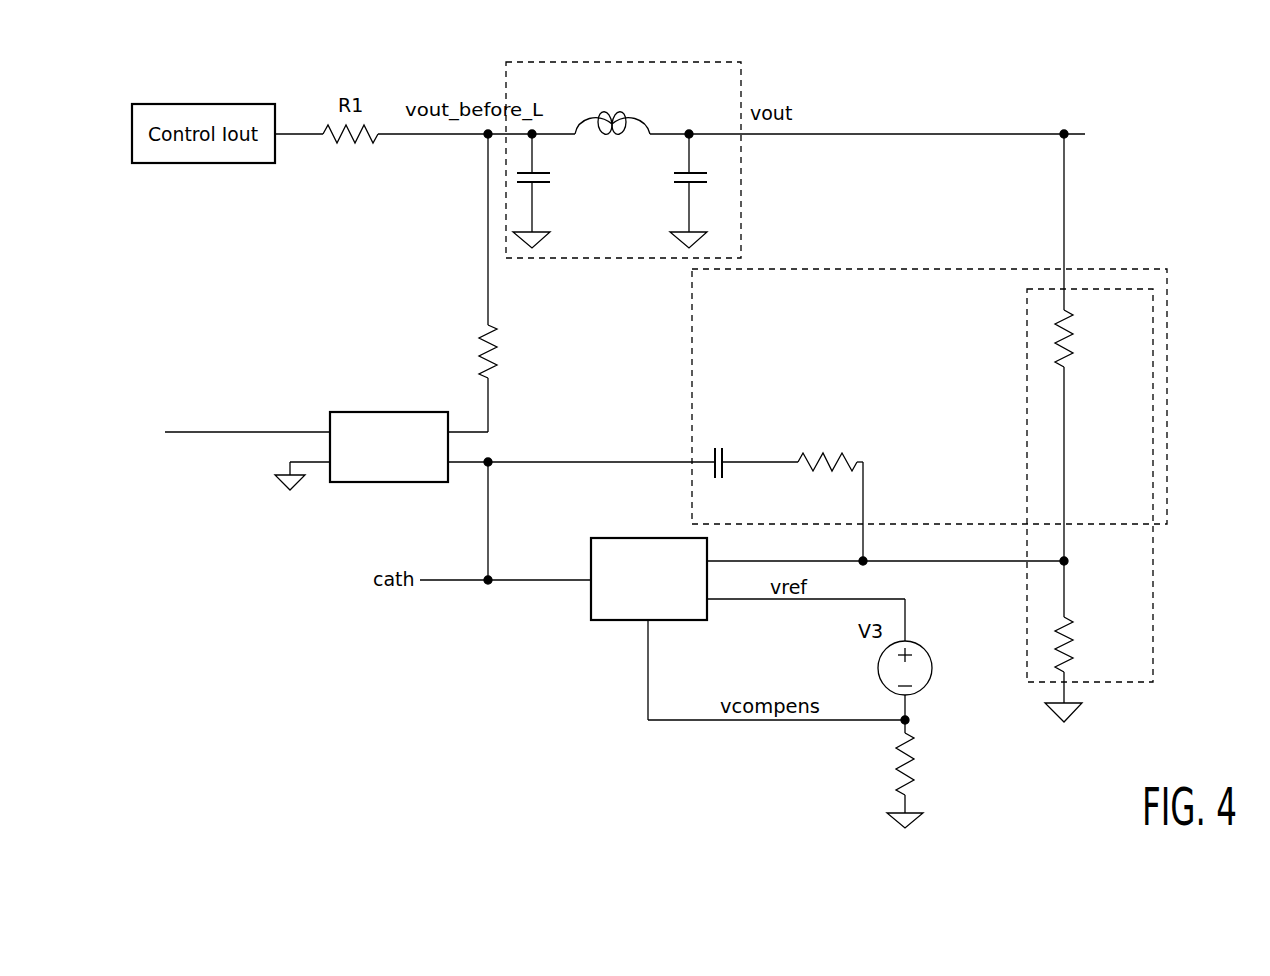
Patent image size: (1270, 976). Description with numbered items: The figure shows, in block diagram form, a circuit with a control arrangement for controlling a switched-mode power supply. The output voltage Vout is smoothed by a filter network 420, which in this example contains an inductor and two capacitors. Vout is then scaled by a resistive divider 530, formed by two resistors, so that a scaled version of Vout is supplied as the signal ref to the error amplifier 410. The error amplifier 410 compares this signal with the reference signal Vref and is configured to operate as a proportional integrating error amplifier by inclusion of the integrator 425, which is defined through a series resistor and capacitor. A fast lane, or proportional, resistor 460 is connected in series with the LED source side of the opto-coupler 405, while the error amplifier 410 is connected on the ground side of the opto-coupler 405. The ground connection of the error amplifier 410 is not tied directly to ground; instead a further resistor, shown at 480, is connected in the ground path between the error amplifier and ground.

The filter network 420 is at (545, 78).
The integrator 425 is at (929, 415).
The fast lane resistor 460 is at (505, 357).
The opto-coupler 405 is at (388, 485).
The error amplifier 410 is at (620, 622).
The resistor R7 480 is at (920, 773).
The resistive divider 530 is at (1153, 628).